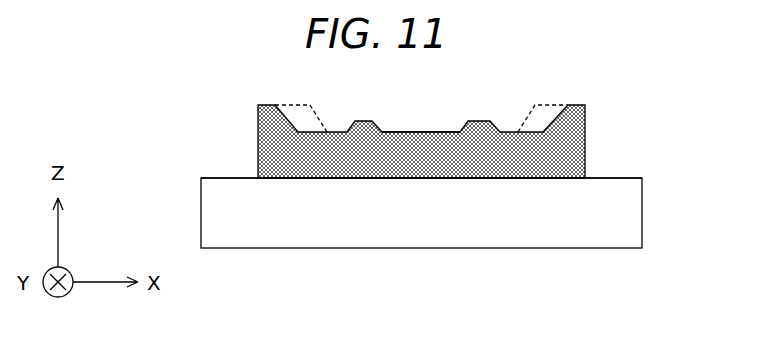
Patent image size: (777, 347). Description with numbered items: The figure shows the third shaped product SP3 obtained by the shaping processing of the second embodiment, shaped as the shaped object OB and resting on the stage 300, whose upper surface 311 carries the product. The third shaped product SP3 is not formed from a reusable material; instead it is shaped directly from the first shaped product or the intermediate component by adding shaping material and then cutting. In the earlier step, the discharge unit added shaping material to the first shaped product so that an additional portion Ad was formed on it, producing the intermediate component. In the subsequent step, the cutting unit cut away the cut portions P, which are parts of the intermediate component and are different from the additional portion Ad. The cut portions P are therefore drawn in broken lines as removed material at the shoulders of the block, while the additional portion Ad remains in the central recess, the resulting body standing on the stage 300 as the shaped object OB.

The stage 300 is at (622, 195).
The surface of substrate 311 is at (613, 178).
The third shaped product SP3 is at (491, 132).
The shaped object OB is at (600, 108).
The cut portion P is at (288, 104).
The additional portion Ad is at (469, 120).